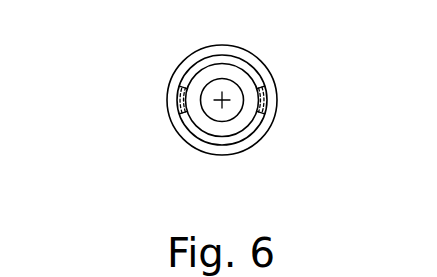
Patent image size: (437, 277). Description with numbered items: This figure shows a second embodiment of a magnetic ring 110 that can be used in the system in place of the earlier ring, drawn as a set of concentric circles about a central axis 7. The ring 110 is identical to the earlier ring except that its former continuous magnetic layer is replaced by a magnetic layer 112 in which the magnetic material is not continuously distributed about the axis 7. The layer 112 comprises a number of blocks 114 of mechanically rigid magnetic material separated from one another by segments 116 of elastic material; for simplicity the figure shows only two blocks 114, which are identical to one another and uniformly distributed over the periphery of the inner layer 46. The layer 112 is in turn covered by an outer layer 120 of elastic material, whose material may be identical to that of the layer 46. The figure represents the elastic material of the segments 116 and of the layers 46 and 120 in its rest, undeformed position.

The ring 110 is at (166, 40).
The layer of elastic material 120 is at (219, 48).
The layer 46 is at (238, 70).
The magnetic layer 112 is at (72, 68).
The blocks of mechanically rigid magnetic material 114 is at (175, 116).
The segments of elastic material 116 is at (177, 93).
The axis 7 is at (228, 104).